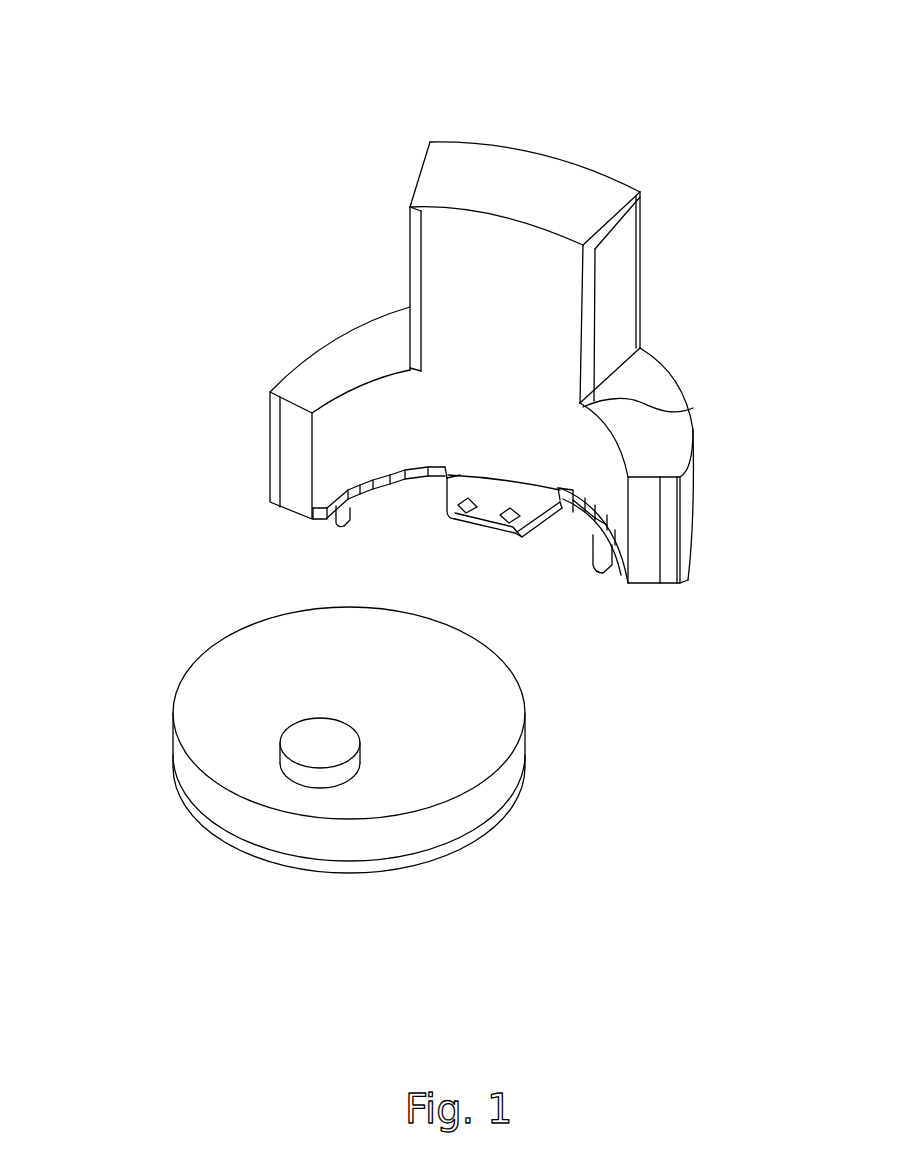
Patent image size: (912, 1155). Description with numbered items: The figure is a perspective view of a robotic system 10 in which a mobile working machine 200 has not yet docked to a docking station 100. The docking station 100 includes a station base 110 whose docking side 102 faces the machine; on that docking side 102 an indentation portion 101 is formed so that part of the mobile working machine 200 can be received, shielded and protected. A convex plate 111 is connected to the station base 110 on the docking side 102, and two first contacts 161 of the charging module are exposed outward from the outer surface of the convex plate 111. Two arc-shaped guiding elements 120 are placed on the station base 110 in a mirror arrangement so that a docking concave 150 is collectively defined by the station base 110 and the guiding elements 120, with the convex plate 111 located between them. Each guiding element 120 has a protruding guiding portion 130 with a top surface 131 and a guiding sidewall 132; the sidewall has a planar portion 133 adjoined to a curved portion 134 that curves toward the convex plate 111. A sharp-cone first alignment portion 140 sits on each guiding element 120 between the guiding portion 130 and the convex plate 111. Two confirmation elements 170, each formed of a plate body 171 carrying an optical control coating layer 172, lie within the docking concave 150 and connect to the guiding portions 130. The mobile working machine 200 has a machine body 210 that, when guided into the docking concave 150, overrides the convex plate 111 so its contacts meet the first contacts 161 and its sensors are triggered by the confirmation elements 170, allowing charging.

The robotic system 10 is at (146, 29).
The docking station 100 is at (385, 118).
The indentation portion 101 is at (693, 408).
The docking side 102 is at (377, 397).
The station base 110 is at (588, 436).
The convex plate 111 is at (522, 532).
The guiding elements 120 is at (108, 433).
The guiding portions 130 is at (172, 475).
The top surface 131 is at (333, 498).
The guiding sidewall 132 is at (312, 511).
The planar portion 133 is at (360, 513).
The curved portion 134 is at (370, 517).
The first alignment portions 140 is at (413, 470).
The docking concave 150 is at (503, 550).
The first contacts 161 is at (460, 510).
The confirmation elements 170 is at (250, 542).
The plate body 171 is at (343, 517).
The optical control coating layer 172 is at (350, 510).
The mobile working machine 200 is at (151, 655).
The machine body 210 is at (457, 820).